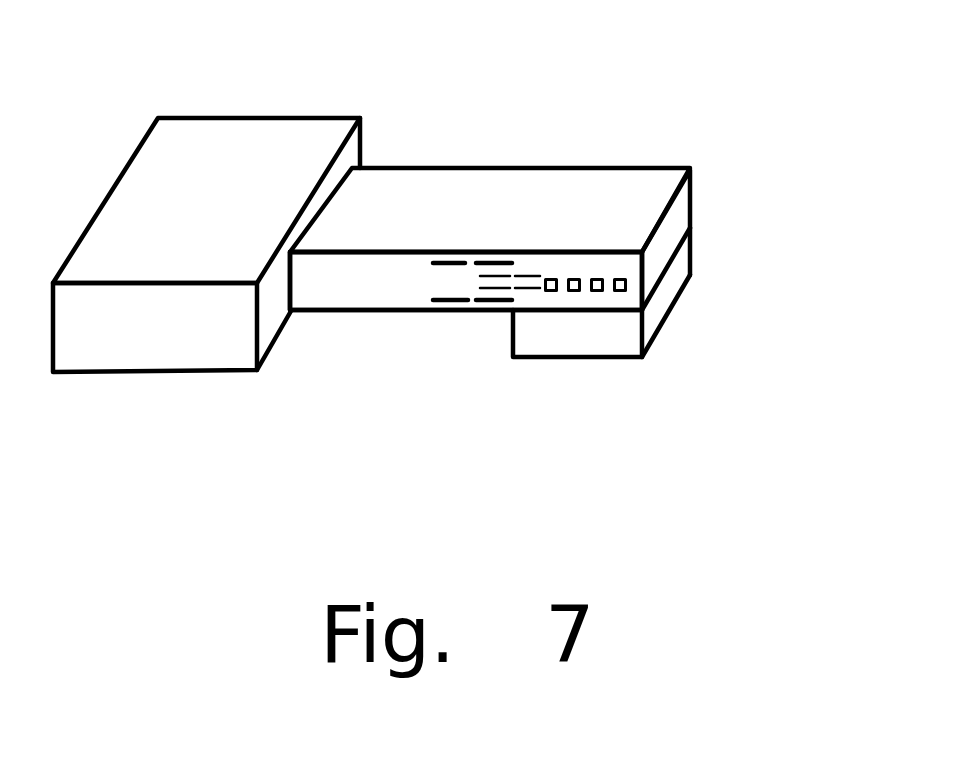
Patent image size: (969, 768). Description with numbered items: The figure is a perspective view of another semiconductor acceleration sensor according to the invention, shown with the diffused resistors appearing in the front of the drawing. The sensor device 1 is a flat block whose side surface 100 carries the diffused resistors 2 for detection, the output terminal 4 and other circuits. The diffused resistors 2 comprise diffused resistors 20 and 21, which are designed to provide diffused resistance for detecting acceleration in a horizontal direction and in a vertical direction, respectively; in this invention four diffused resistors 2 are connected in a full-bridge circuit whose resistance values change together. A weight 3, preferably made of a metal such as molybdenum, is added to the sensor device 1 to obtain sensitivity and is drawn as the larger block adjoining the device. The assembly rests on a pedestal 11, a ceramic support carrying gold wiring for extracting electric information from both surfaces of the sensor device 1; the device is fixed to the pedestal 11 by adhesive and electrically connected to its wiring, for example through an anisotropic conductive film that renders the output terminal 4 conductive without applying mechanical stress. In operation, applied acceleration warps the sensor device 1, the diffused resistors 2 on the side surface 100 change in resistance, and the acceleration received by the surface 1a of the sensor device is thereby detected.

The sensor device 1 is at (512, 189).
The surface of the sensor device 1a is at (475, 200).
The diffused resistors 2 is at (450, 303).
The weight 3 is at (240, 158).
The output terminal 4 is at (622, 292).
The pedestal 11 is at (573, 342).
The diffused resistors for horizontal acceleration 20 is at (437, 260).
The diffused resistors for vertical acceleration 21 is at (527, 289).
The side surface 100 is at (580, 263).